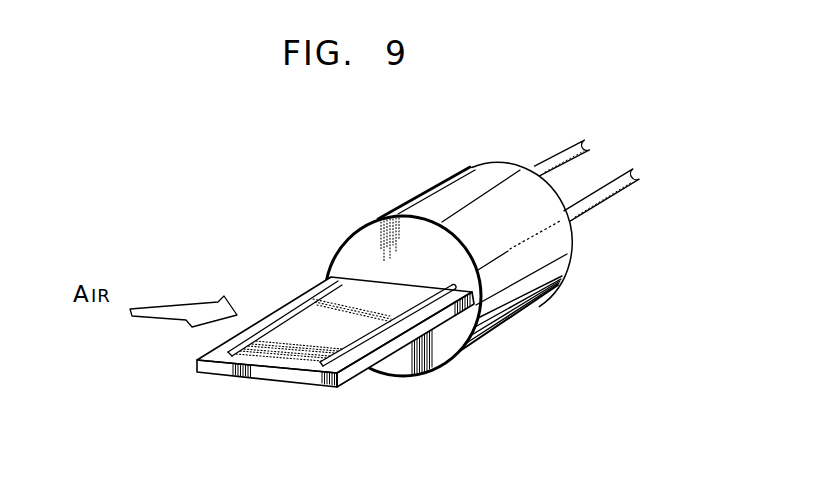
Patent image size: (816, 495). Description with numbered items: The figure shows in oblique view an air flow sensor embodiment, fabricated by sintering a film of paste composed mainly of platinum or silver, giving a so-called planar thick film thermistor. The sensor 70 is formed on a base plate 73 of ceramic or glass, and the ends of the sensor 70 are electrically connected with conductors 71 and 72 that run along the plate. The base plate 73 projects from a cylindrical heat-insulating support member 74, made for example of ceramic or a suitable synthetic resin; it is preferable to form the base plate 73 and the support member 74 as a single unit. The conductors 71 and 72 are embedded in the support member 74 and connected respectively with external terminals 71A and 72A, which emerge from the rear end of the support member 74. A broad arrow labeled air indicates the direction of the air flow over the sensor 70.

The sensor 70 is at (288, 350).
The conductor 71 is at (228, 357).
The conductor 72 is at (323, 363).
The base plate 73 is at (343, 384).
The support member 74 is at (427, 195).
The external terminal 71A is at (567, 156).
The external terminal 72A is at (600, 200).